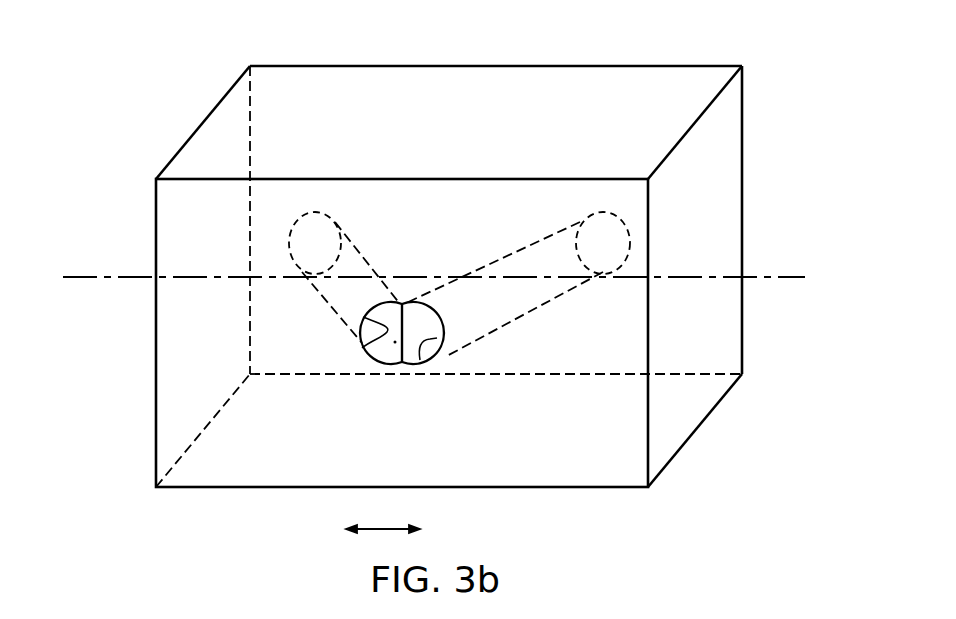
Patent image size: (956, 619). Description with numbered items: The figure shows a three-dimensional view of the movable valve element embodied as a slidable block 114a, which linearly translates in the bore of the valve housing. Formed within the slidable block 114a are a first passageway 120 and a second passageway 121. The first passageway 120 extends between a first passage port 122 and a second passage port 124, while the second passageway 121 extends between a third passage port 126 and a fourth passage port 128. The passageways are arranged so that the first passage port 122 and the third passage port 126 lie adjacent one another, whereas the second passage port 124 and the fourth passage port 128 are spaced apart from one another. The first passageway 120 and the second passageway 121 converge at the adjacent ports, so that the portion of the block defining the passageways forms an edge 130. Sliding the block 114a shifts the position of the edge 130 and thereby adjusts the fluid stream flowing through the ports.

The slidable block 114a is at (708, 33).
The second passage port 124 is at (320, 210).
The fourth passage port 128 is at (612, 221).
The first passageway 120 is at (340, 297).
The second passageway 121 is at (520, 297).
The first passage port 122 is at (370, 340).
The third passage port 126 is at (437, 338).
The edge 130 is at (395, 342).